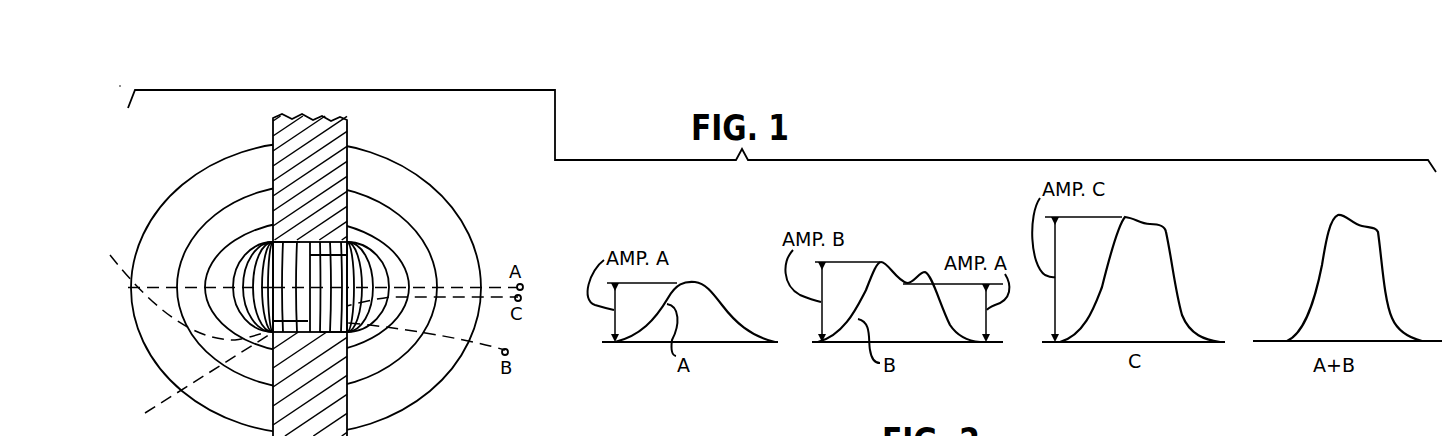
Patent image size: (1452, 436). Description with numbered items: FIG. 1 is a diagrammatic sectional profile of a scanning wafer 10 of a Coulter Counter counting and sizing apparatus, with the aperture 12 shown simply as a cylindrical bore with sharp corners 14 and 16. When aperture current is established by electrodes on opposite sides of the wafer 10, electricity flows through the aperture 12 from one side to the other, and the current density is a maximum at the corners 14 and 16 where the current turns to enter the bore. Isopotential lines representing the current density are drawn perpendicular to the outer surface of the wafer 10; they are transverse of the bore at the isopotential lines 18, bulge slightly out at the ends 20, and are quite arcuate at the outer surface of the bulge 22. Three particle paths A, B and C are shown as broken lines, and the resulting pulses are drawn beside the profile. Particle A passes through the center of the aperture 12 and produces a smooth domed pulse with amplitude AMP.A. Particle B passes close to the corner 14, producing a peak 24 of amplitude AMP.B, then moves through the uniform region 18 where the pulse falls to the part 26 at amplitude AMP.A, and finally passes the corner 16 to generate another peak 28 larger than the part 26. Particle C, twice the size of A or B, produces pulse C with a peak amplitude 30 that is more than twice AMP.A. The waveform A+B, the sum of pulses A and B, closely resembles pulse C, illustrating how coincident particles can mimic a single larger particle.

The wafer 10 is at (335, 127).
The aperture 12 is at (298, 240).
The corner 14 is at (273, 332).
The corner 16 is at (350, 333).
The isopotential lines 18 is at (347, 255).
The ends of isopotential lines 20 is at (248, 305).
The outer surface of the bulge 22 is at (203, 268).
The peak 24 is at (880, 262).
The part of pulse B 26 is at (905, 284).
The peak 28 is at (925, 271).
The peak amplitude 30 is at (1122, 217).